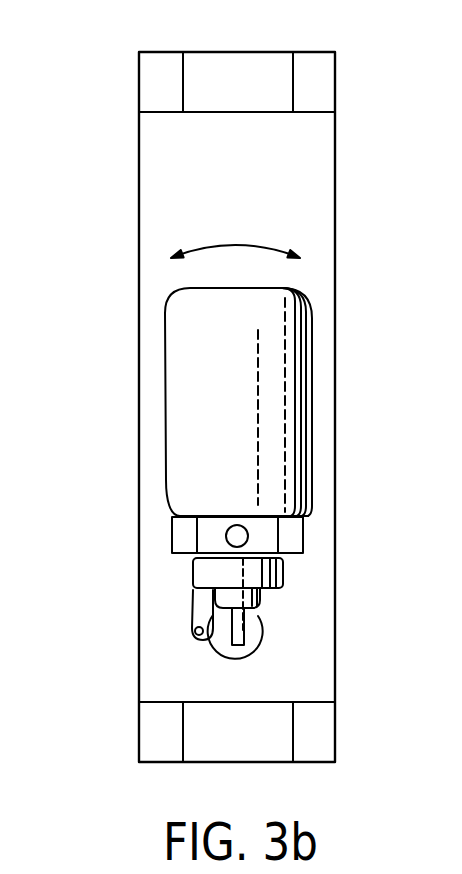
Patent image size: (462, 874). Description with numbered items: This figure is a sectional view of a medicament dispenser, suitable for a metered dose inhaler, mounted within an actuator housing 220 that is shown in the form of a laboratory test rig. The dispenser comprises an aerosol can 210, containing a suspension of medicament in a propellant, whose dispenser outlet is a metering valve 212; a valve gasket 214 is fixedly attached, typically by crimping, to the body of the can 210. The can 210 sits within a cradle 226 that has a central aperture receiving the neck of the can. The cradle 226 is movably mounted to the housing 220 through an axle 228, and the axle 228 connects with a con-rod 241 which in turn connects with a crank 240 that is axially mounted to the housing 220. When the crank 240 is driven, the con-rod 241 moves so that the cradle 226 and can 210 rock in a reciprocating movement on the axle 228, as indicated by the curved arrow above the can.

The actuator housing 220 is at (212, 78).
The aerosol can 210 is at (176, 340).
The cradle 226 is at (300, 533).
The axle 228 is at (229, 538).
The valve gasket 214 is at (276, 573).
The metering valve 212 is at (244, 620).
The con-rod 241 is at (192, 620).
The crank 240 is at (218, 646).